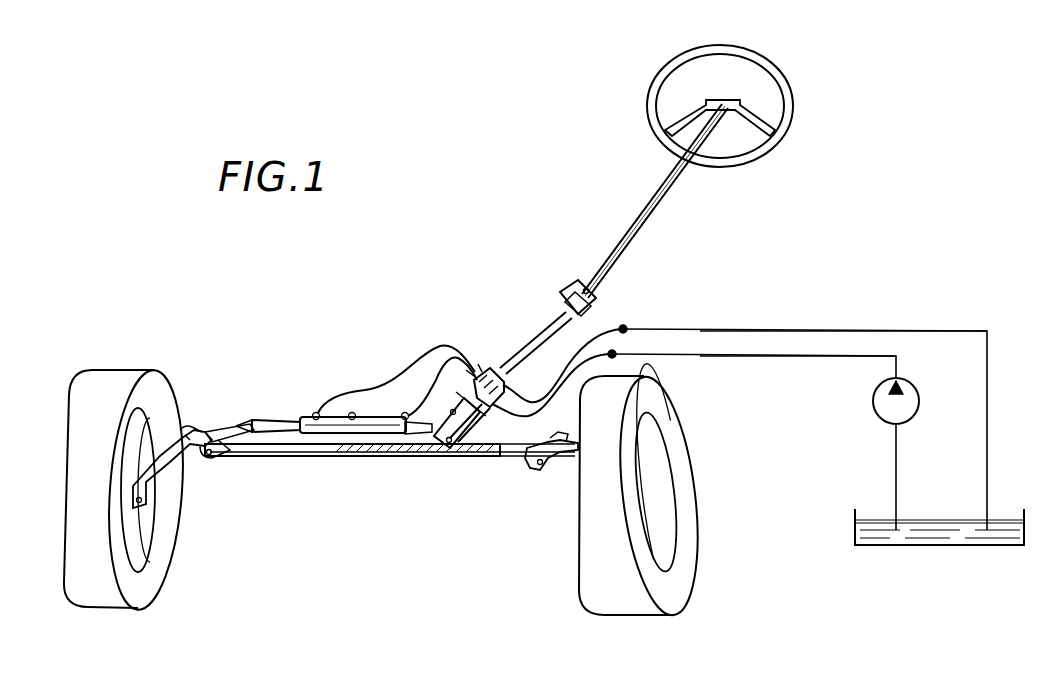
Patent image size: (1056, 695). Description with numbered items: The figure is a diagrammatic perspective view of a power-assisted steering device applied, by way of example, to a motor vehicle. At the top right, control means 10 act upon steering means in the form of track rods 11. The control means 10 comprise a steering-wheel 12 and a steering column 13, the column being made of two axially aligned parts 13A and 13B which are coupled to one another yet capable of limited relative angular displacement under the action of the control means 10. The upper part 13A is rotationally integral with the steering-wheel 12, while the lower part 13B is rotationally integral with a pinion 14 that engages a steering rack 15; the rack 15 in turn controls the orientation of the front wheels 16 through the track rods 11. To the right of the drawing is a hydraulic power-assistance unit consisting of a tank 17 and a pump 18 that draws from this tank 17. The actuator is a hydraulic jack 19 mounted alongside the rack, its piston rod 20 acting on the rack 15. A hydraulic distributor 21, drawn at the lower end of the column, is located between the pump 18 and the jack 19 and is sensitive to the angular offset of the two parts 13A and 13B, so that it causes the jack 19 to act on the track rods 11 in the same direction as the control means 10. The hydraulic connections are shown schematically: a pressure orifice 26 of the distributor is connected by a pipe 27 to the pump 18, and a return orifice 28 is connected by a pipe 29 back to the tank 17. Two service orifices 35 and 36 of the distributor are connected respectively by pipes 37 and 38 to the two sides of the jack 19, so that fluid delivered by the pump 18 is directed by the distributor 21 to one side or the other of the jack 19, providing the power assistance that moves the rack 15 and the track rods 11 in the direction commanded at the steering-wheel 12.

The control means 10 is at (588, 251).
The track rods 11 is at (210, 426).
The steering-wheel 12 is at (760, 60).
The steering column 13 is at (655, 190).
The first part of steering column 13A is at (543, 330).
The second part of steering column 13B is at (462, 440).
The pinion 14 is at (447, 446).
The steering rack 15 is at (372, 456).
The front wheels 16 is at (103, 596).
The tank 17 is at (940, 546).
The pump 18 is at (872, 401).
The hydraulic jack 19 is at (352, 412).
The piston rod 20 is at (274, 418).
The hydraulic distributor 21 is at (489, 364).
The pressure orifice 26 is at (493, 404).
The pipe 27 is at (757, 358).
The return orifice 28 is at (514, 400).
The pipe 29 is at (792, 330).
The service orifice 35 is at (480, 368).
The service orifice 36 is at (470, 372).
The pipe 37 is at (410, 366).
The pipe 38 is at (440, 398).